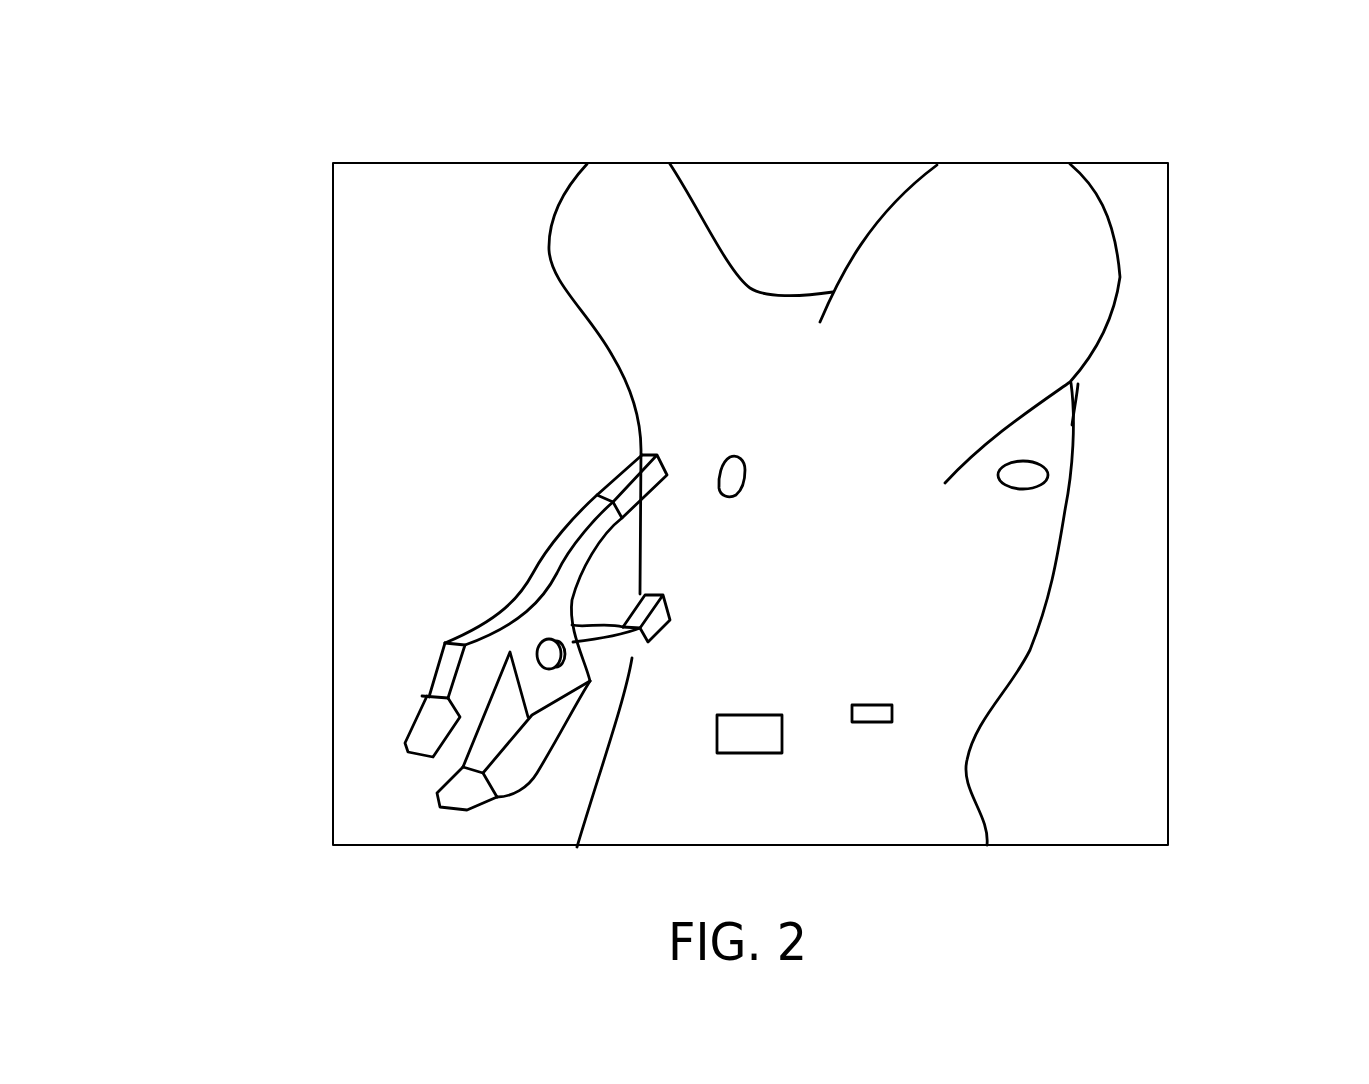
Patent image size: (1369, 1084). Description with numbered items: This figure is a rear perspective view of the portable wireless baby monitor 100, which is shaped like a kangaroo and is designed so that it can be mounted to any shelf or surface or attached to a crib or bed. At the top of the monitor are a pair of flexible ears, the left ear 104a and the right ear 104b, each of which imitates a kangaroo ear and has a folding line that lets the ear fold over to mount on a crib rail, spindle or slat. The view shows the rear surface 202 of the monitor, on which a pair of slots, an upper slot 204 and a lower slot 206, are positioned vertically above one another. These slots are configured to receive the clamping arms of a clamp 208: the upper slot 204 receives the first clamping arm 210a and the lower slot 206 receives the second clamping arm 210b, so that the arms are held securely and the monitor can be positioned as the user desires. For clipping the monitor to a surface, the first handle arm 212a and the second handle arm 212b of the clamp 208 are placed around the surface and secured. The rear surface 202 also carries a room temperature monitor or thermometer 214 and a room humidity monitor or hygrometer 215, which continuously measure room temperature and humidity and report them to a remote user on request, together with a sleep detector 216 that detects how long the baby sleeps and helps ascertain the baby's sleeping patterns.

The baby monitor 100 is at (435, 273).
The left ear 104a is at (630, 267).
The right ear 104b is at (1023, 265).
The rear surface 202 is at (900, 570).
The upper slot 204 is at (745, 477).
The lower slot 206 is at (736, 612).
The clamp 208 is at (523, 623).
The first clamping arm 210a is at (593, 497).
The second clamping arm 210b is at (622, 662).
The first handle arm 212a is at (430, 728).
The second handle arm 212b is at (515, 768).
The thermometer 214 is at (892, 713).
The hygrometer 215 is at (782, 745).
The sleep detector 216 is at (1022, 483).